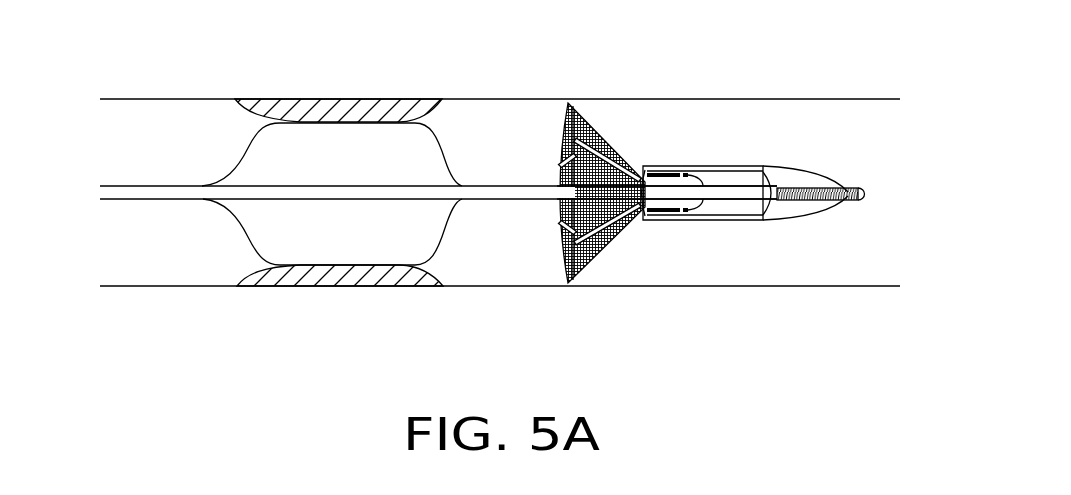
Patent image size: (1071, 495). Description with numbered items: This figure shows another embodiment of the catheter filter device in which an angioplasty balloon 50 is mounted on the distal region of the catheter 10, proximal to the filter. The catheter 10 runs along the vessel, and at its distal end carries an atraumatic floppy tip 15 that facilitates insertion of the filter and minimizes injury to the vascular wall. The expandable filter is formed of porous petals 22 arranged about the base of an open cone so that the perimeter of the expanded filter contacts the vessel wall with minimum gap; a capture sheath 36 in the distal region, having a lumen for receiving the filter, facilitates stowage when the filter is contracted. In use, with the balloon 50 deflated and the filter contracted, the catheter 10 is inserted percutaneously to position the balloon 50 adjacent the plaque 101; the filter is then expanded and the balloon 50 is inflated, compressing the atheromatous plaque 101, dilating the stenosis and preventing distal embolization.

The catheter 10 is at (145, 185).
The plaque 101 is at (327, 110).
The angioplasty balloon 50 is at (348, 238).
The petal 22 is at (593, 138).
The capture sheath 36 is at (722, 225).
The atraumatic floppy tip 15 is at (850, 188).